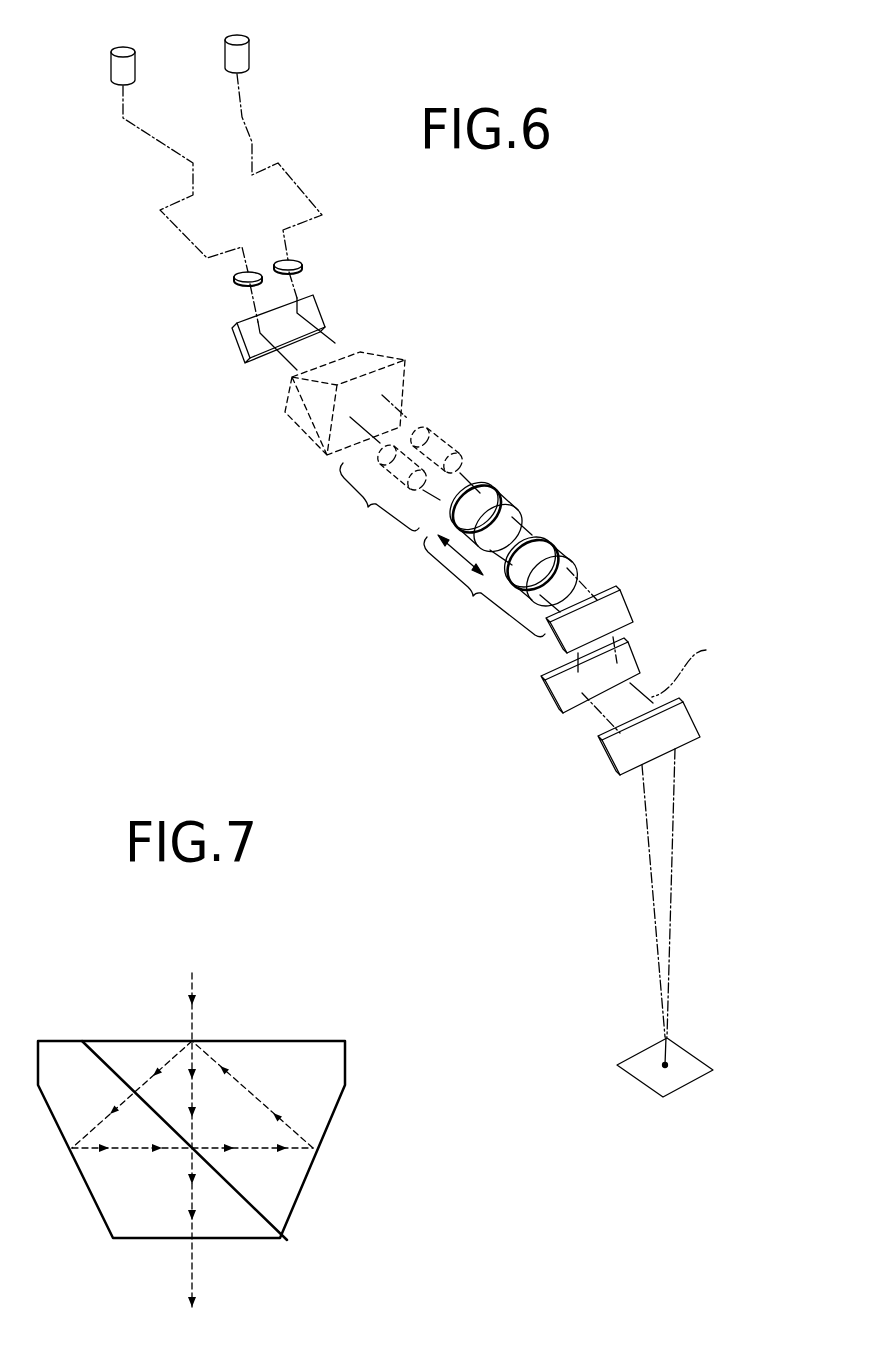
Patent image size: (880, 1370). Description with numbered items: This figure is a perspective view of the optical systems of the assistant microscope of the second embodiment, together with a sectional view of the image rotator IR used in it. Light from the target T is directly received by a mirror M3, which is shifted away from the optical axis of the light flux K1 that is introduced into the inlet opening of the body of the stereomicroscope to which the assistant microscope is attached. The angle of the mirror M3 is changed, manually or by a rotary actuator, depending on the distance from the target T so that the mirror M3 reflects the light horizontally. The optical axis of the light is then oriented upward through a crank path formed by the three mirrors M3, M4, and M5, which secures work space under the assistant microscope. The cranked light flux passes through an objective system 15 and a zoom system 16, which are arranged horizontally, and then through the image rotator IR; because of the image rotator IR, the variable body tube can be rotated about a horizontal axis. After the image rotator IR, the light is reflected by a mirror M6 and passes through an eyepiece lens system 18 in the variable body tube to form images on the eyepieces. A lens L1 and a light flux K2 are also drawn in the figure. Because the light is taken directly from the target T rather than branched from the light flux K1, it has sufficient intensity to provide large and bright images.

In FIG. 6, the eyepiece lens system 18 is at (207, 270).
In FIG. 6, the mirror M6 is at (324, 310).
In FIG. 6, the image rotator IR is at (410, 375).
In FIG. 7, the image rotator IR is at (283, 992).
In FIG. 6, the zoom system 16 is at (378, 502).
In FIG. 6, the objective system 15 is at (484, 586).
In FIG. 6, the lens L1 is at (500, 493).
In FIG. 6, the mirror M5 is at (627, 600).
In FIG. 6, the mirror M4 is at (637, 660).
In FIG. 6, the light beam K2 is at (698, 668).
In FIG. 6, the mirror M3 is at (695, 722).
In FIG. 6, the light flux K1 is at (672, 888).
In FIG. 6, the target T is at (667, 1065).